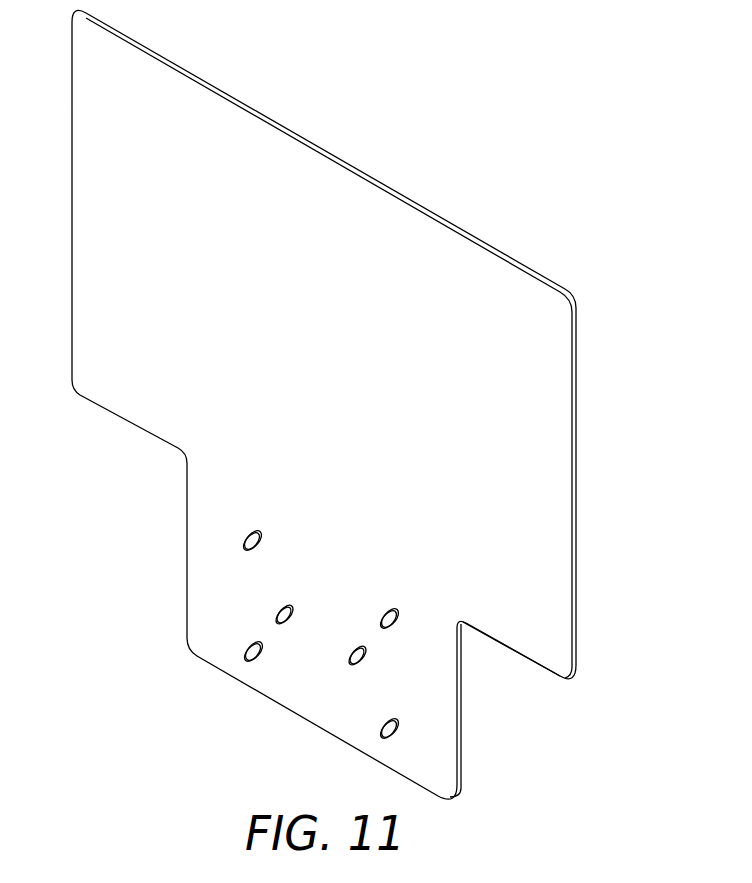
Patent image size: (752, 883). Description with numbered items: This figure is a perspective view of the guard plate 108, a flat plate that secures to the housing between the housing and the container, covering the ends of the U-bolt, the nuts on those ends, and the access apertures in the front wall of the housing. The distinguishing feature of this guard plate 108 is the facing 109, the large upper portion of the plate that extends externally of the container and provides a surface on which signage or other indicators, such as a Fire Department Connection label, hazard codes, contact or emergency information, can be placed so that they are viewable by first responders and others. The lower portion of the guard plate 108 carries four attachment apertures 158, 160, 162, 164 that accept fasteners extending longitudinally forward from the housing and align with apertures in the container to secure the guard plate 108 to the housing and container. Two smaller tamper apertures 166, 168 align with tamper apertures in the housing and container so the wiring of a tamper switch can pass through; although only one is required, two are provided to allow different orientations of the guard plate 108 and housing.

The facing 109 is at (538, 412).
The guard plate 108 is at (540, 661).
The attachment aperture 158 is at (246, 548).
The attachment aperture 160 is at (246, 645).
The attachment aperture 162 is at (390, 632).
The attachment aperture 164 is at (398, 730).
The tamper aperture 166 is at (285, 626).
The tamper aperture 168 is at (356, 667).